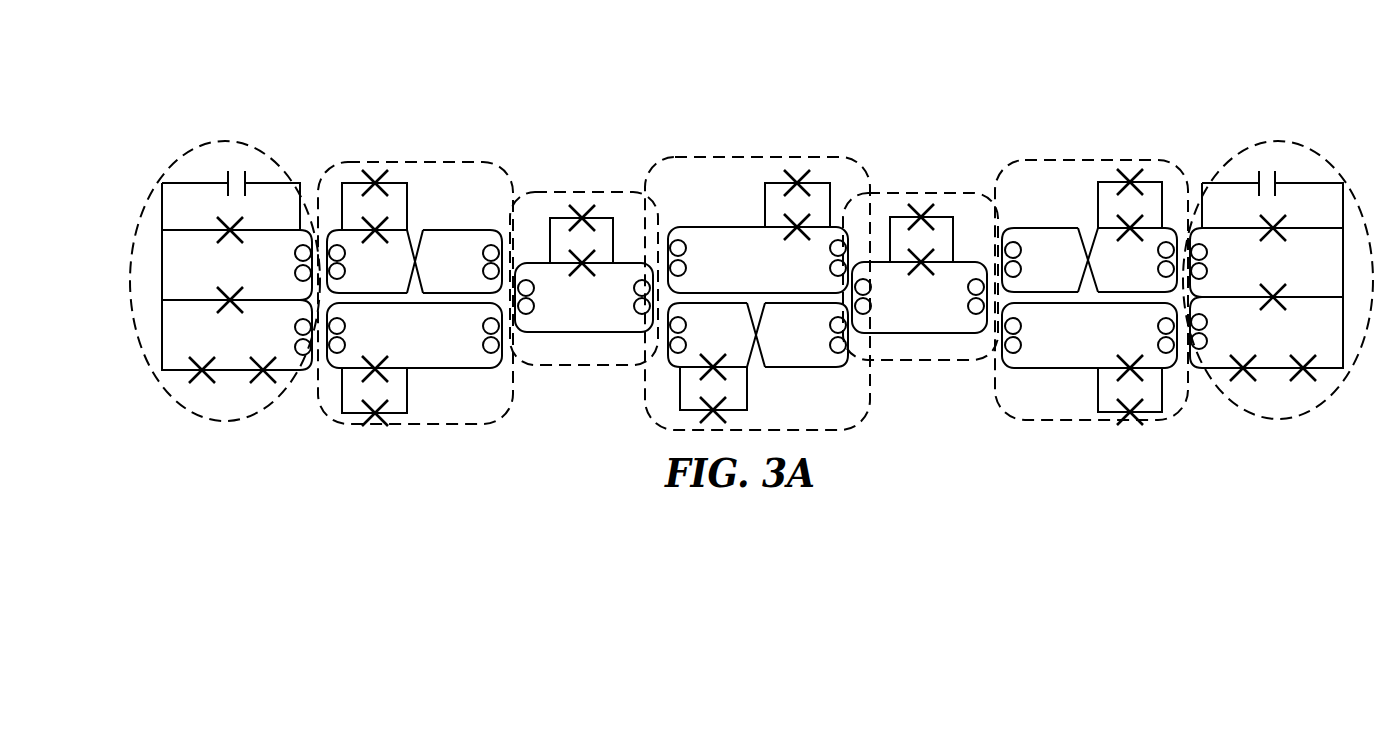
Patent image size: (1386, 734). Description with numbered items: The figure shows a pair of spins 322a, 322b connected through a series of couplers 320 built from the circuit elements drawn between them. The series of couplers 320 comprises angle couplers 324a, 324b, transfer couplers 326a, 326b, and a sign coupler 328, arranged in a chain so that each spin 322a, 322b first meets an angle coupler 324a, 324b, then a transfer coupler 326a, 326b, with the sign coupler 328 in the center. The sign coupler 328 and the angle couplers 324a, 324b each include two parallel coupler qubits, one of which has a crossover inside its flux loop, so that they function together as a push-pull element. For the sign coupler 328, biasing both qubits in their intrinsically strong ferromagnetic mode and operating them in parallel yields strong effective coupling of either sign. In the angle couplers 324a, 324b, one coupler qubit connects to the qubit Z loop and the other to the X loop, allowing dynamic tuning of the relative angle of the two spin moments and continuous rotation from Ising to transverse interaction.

The series of couplers 320 is at (274, 62).
The spin 322a is at (216, 133).
The spin 322b is at (1232, 129).
The angle coupler 324a is at (384, 143).
The angle coupler 324b is at (1064, 142).
The transfer coupler 326a is at (559, 143).
The transfer coupler 326b is at (894, 142).
The sign coupler 328 is at (731, 143).